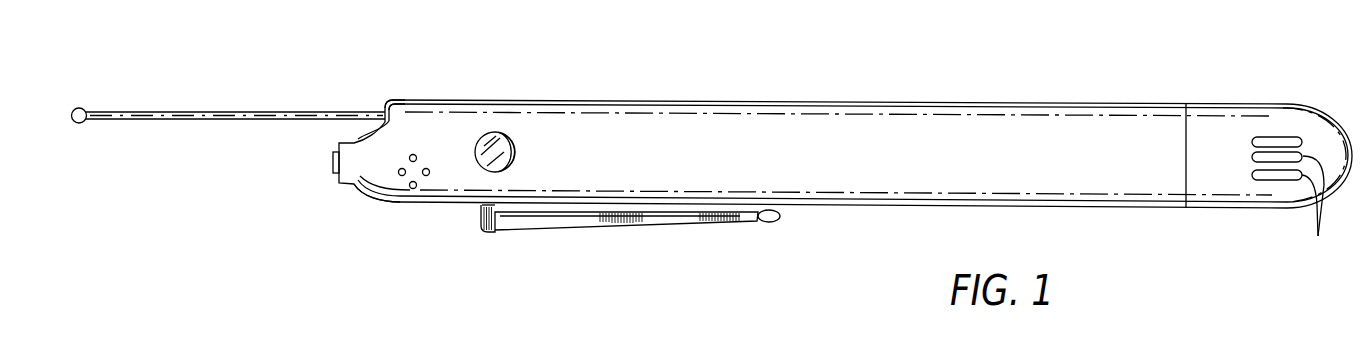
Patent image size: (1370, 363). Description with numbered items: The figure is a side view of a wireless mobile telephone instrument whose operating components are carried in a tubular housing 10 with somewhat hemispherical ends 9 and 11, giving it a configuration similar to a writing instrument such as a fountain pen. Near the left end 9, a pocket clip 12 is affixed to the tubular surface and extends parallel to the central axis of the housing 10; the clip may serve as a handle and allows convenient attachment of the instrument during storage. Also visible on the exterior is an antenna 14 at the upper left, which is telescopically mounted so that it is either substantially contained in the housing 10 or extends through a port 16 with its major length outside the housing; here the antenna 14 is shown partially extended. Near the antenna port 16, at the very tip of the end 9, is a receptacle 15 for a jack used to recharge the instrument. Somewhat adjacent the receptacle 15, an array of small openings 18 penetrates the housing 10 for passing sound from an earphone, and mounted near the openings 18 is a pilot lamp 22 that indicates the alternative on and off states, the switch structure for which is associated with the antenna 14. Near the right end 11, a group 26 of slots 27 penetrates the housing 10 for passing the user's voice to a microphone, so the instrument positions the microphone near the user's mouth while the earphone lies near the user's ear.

The hemispherical end 9 is at (356, 192).
The tubular housing 10 is at (954, 98).
The hemispherical end 11 is at (1347, 132).
The pocket clip 12 is at (590, 222).
The antenna 14 is at (170, 112).
The receptacle 15 is at (332, 163).
The port 16 is at (383, 112).
The array of small openings 18 is at (405, 180).
The pilot lamp 22 is at (497, 132).
The group of slots 26 is at (1226, 155).
The slots 27 is at (1325, 205).